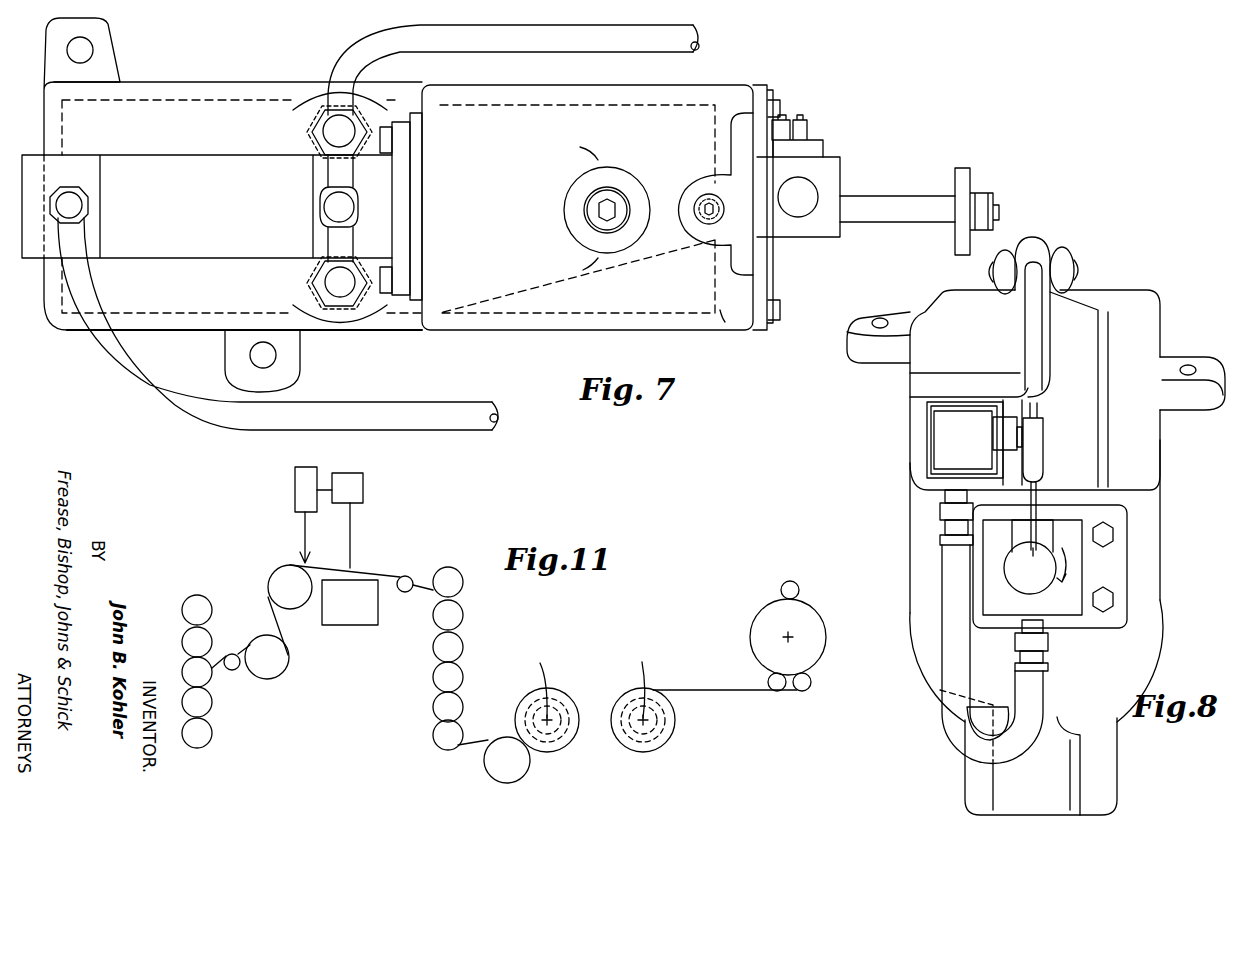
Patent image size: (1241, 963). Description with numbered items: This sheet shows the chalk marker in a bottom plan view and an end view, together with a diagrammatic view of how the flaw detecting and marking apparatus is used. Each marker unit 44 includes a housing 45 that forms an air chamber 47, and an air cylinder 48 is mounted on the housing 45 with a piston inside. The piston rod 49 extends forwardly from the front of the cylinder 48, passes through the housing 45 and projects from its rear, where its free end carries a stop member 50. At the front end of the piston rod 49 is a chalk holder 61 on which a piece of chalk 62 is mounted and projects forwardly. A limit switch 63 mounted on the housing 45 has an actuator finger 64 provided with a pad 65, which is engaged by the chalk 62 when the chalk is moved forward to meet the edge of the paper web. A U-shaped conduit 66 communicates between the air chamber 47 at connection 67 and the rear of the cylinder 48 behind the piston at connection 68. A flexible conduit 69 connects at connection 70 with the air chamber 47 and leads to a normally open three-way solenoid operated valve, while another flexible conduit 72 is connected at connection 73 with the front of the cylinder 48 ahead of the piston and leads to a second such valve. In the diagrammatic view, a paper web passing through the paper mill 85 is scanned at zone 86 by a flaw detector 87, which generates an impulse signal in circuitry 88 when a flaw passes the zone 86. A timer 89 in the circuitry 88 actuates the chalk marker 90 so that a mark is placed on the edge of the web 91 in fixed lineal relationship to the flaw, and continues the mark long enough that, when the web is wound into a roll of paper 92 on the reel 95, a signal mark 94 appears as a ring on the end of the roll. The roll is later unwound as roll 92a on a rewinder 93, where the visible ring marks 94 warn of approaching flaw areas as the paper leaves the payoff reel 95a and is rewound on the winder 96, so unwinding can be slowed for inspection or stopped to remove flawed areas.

In FIG. 7, the marker unit 44 is at (762, 79).
In FIG. 8, the marker unit 44 is at (897, 540).
In FIG. 7, the housing 45 is at (683, 330).
In FIG. 8, the housing 45 is at (1143, 440).
In FIG. 7, the air chamber 47 is at (172, 110).
In FIG. 7, the air cylinder 48 is at (195, 170).
In FIG. 7, the piston rod 49 is at (874, 197).
In FIG. 7, the stop member 50 is at (962, 178).
In FIG. 8, the chalk holder 61 is at (1077, 587).
In FIG. 8, the piece of chalk 62 is at (1024, 575).
In FIG. 8, the limit switch 63 is at (940, 437).
In FIG. 8, the actuator finger 64 is at (1040, 497).
In FIG. 8, the pad 65 is at (1050, 533).
In FIG. 7, the U-shaped conduit 66 is at (345, 236).
In FIG. 8, the U-shaped conduit 66 is at (950, 663).
In FIG. 7, the air chamber connection 67 is at (343, 300).
In FIG. 8, the air chamber connection 67 is at (942, 493).
In FIG. 7, the cylinder rear connection 68 is at (330, 205).
In FIG. 8, the cylinder rear connection 68 is at (1043, 633).
In FIG. 7, the flexible conduit 69 is at (675, 30).
In FIG. 7, the conduit connection 70 is at (322, 132).
In FIG. 7, the flexible conduit 72 is at (460, 420).
In FIG. 7, the cylinder front connection 73 is at (78, 201).
In FIG. 11, the paper mill 85 is at (271, 715).
In FIG. 11, the scanning zone 86 is at (298, 563).
In FIG. 11, the flaw detector 87 is at (295, 480).
In FIG. 11, the circuitry 88 is at (320, 484).
In FIG. 11, the timer 89 is at (364, 490).
In FIG. 11, the chalk marker 90 is at (350, 618).
In FIG. 11, the web 91 is at (383, 573).
In FIG. 11, the roll of paper 92 is at (548, 752).
In FIG. 11, the unwinding roll 92a is at (653, 752).
In FIG. 11, the rewinder 93 is at (741, 715).
In FIG. 11, the signal mark 94 is at (565, 710).
In FIG. 11, the reel 95 is at (533, 682).
In FIG. 11, the payoff reel 95a is at (646, 680).
In FIG. 11, the winder 96 is at (787, 636).